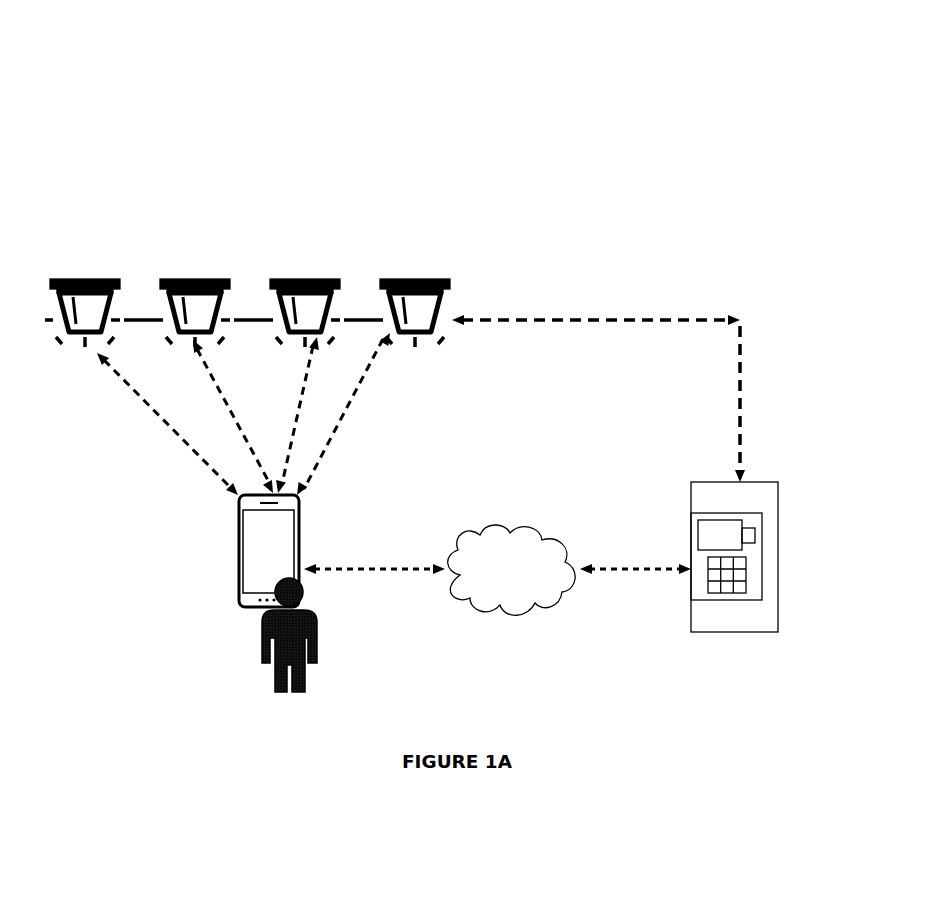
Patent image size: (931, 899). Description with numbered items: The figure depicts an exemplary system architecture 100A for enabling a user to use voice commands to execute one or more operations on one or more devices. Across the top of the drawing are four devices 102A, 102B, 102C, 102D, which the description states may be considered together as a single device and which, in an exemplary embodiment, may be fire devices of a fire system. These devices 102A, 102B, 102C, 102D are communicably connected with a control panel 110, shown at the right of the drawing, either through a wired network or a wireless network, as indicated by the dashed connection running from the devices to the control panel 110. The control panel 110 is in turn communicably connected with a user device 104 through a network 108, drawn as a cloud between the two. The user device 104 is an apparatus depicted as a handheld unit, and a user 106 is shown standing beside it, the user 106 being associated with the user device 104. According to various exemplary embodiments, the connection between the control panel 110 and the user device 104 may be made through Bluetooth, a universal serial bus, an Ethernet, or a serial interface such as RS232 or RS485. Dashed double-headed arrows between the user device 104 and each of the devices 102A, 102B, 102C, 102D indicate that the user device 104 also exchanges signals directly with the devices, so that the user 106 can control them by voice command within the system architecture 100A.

The system architecture 100A is at (452, 92).
The device 102A is at (85, 277).
The device 102B is at (195, 277).
The device 102C is at (305, 277).
The device 102D is at (415, 277).
The user device 104 is at (300, 527).
The user 106 is at (303, 607).
The network 108 is at (533, 527).
The control panel 110 is at (753, 482).